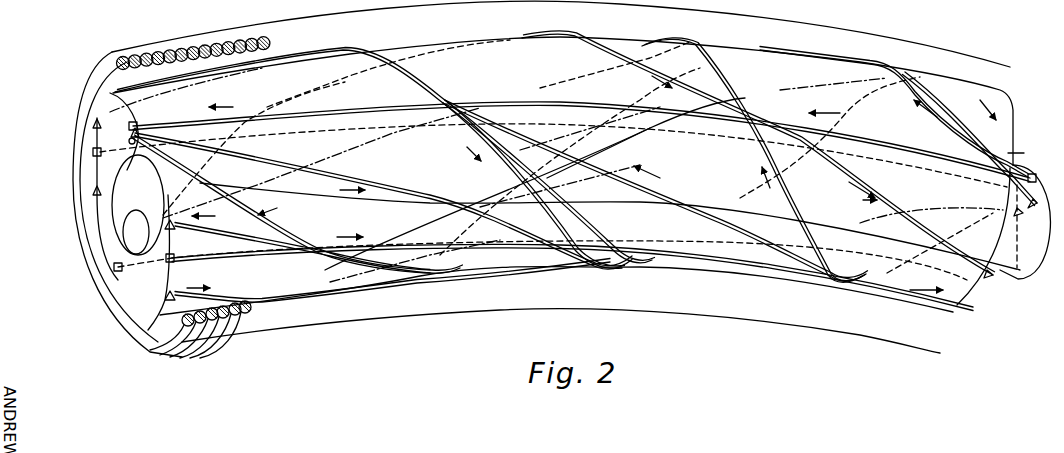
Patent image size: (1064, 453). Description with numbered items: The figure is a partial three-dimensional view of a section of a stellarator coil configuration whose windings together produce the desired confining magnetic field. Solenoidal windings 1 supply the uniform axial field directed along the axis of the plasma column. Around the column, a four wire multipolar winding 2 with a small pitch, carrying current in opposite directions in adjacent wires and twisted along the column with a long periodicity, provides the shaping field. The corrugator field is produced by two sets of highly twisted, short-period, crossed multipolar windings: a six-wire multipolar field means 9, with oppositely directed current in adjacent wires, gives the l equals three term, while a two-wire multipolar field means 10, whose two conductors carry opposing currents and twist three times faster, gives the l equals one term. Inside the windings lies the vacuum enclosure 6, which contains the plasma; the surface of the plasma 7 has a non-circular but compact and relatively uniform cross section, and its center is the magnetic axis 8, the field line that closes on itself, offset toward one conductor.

The solenoidal windings 1 is at (165, 42).
The four wire multipolar winding 2 is at (318, 103).
The vacuum enclosure 6 is at (153, 338).
The surface of the plasma 7 is at (128, 233).
The magnetic axis 8 is at (133, 208).
The six-wire multipolar field means 9 is at (91, 124).
The two-wire multipolar field means 10 is at (200, 182).